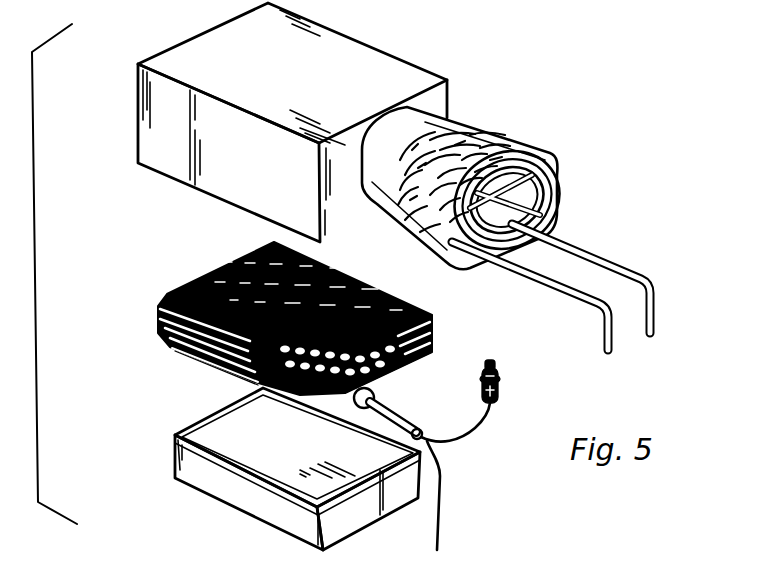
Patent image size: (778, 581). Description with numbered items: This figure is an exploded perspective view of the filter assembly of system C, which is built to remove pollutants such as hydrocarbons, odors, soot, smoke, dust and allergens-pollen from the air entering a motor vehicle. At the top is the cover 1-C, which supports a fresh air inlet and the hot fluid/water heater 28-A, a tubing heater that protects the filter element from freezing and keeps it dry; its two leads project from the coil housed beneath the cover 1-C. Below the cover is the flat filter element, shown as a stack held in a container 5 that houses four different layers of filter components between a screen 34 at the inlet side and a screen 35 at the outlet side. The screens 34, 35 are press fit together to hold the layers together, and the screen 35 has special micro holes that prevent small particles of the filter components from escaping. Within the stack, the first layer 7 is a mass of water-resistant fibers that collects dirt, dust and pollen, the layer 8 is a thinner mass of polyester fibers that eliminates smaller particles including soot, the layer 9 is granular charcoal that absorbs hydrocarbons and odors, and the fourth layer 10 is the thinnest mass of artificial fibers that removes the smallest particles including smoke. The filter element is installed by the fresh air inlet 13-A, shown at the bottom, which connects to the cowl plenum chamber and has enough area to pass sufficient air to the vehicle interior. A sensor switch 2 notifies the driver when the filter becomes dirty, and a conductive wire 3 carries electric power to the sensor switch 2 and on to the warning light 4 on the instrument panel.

The cover 1-C is at (138, 105).
The hot fluid/water heater 28-A is at (580, 243).
The screen 34 is at (200, 278).
The container 5 is at (159, 318).
The first layer 7 is at (243, 340).
The second or third layer 8 is at (252, 351).
The fourth layer 10 is at (258, 363).
The third or second layer 9 is at (248, 377).
The screen 35 is at (423, 368).
The fresh air inlet 13-A is at (177, 457).
The sensor switch 2 is at (380, 399).
The conductive wire 3 is at (445, 477).
The warning light 4 is at (500, 381).